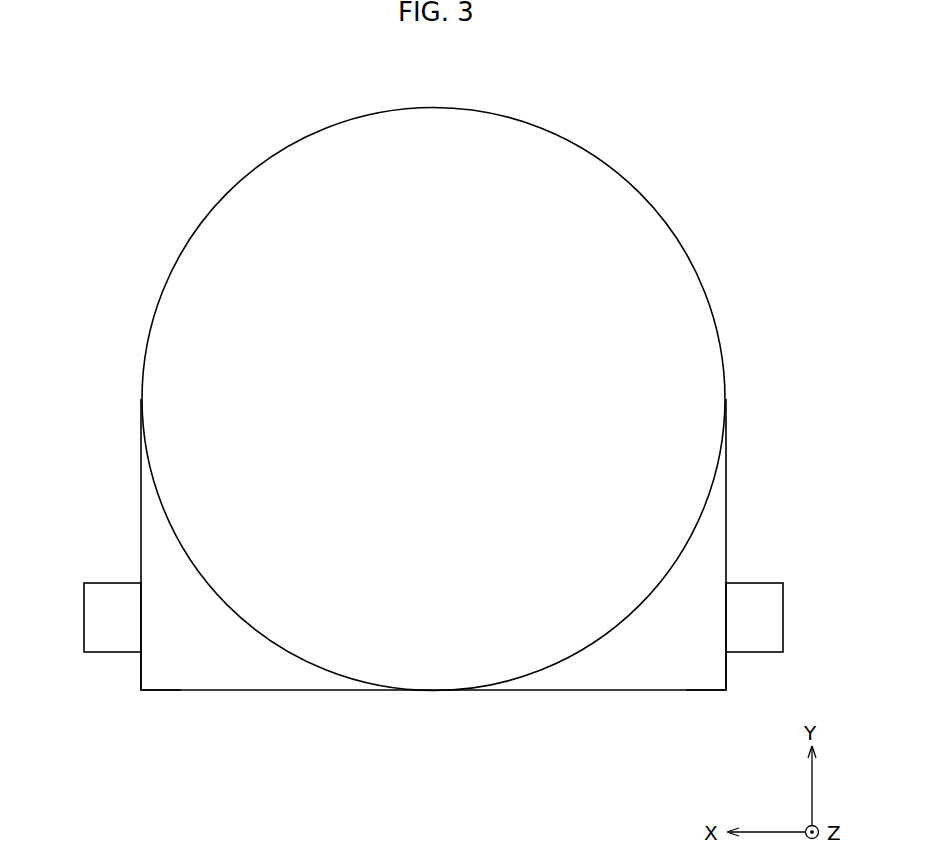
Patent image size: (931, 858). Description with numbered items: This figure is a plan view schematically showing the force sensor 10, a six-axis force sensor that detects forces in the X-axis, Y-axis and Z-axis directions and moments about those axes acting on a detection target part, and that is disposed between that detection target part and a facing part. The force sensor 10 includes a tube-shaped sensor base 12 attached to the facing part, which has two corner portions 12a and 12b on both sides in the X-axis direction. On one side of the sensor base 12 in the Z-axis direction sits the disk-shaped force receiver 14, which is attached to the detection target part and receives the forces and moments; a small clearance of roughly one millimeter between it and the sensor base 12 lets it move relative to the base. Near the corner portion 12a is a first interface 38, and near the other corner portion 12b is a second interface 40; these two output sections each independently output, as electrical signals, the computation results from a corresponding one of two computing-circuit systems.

The force sensor 10 is at (772, 265).
The sensor base 12 is at (727, 528).
The corner portion 12a is at (718, 674).
The corner portion 12b is at (143, 669).
The force receiver 14 is at (663, 220).
The first interface 38 is at (774, 618).
The second interface 40 is at (98, 618).